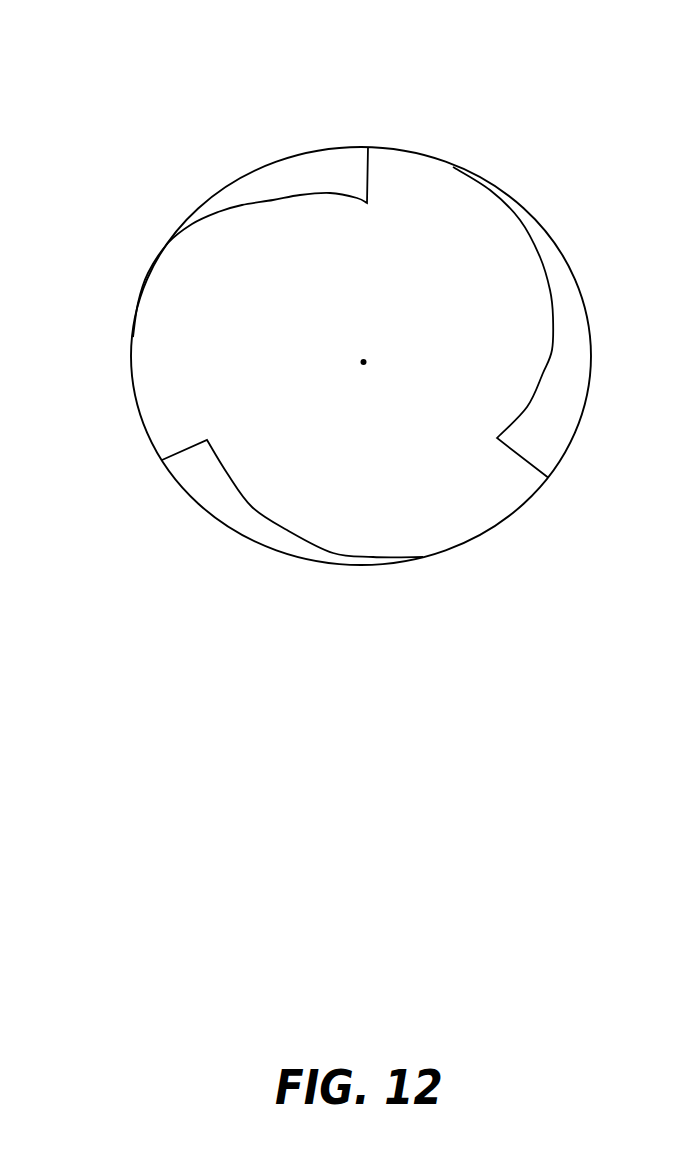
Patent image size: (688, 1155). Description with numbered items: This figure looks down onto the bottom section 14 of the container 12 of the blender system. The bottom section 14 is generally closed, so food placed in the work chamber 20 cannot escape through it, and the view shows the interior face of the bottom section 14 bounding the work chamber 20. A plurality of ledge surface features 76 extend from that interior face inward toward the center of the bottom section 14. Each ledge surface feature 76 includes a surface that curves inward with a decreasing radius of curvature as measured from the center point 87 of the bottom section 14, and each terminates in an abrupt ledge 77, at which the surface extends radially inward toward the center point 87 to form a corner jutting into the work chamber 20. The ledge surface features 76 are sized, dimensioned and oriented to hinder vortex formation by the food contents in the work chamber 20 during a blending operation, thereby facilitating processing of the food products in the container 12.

The container 12 is at (108, 64).
The bottom section 14 is at (118, 322).
The work chamber 20 is at (232, 354).
The ledge surface features 76 is at (273, 200).
The abrupt ledge 77 is at (193, 488).
The center point 87 is at (364, 366).